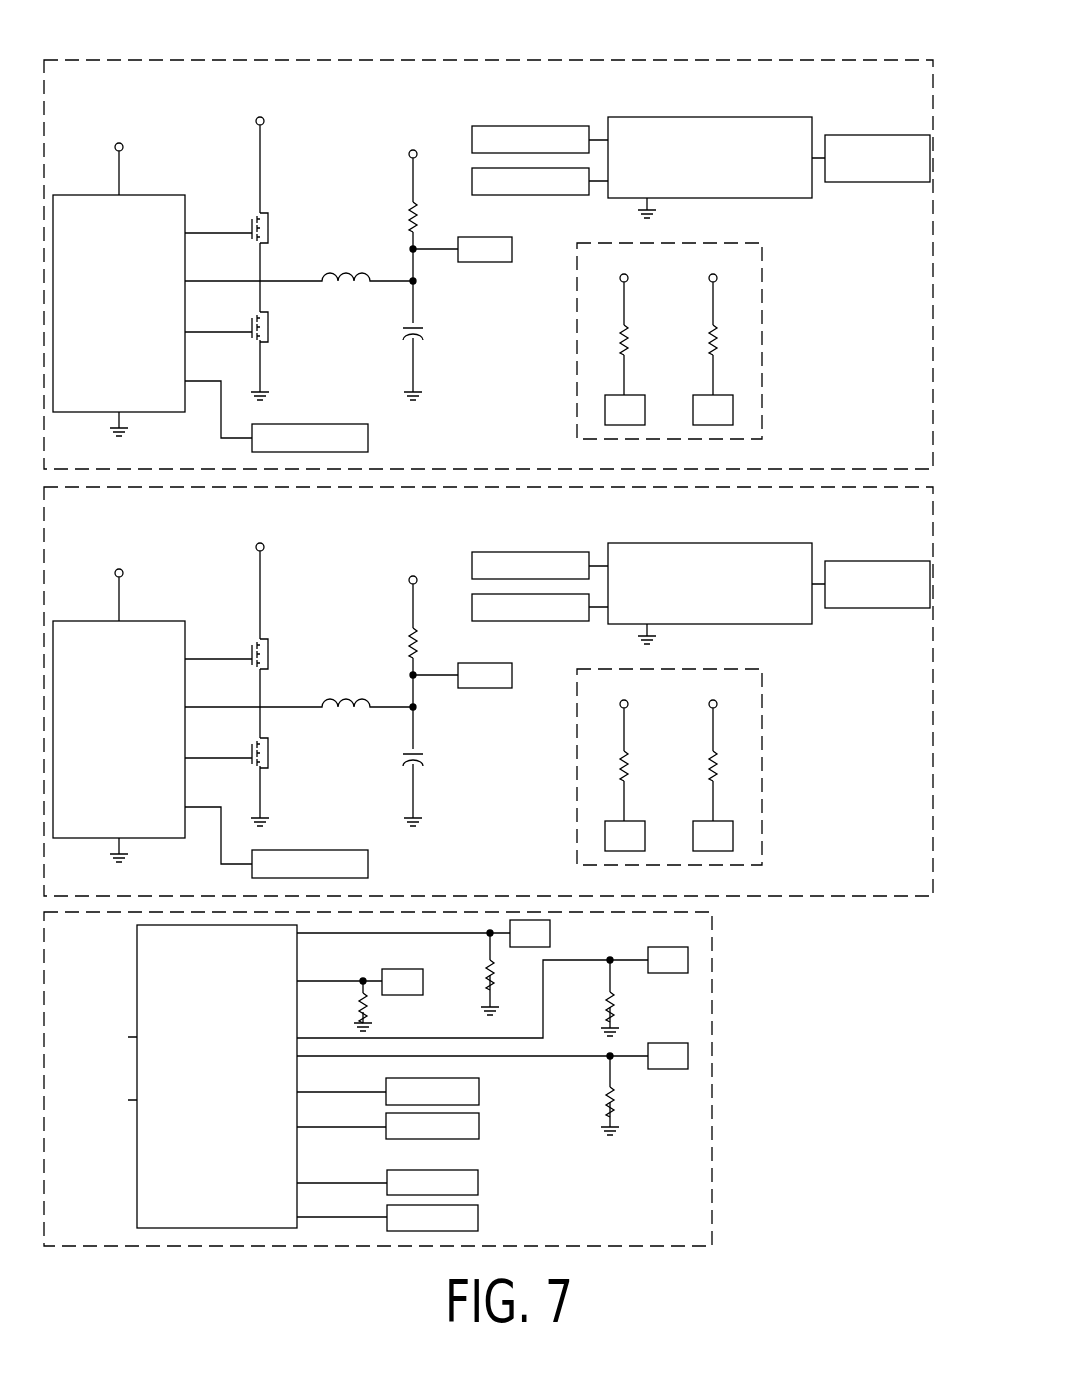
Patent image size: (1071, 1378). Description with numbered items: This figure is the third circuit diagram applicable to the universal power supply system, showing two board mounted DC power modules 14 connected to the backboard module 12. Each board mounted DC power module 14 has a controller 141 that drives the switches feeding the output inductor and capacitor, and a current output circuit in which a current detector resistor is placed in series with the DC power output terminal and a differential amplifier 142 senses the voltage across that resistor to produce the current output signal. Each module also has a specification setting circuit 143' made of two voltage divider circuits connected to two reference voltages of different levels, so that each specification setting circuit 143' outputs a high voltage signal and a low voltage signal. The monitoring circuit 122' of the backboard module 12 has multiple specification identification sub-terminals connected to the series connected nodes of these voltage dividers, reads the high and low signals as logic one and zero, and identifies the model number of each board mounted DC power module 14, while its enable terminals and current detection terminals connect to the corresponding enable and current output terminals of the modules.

The board mounted DC power module 14 is at (415, 60).
The controller 141 is at (146, 195).
The differential amplifier 142 is at (647, 118).
The specification setting circuit 143' is at (721, 554).
The backboard module 12 is at (712, 1118).
The monitoring circuit 122' is at (190, 1113).